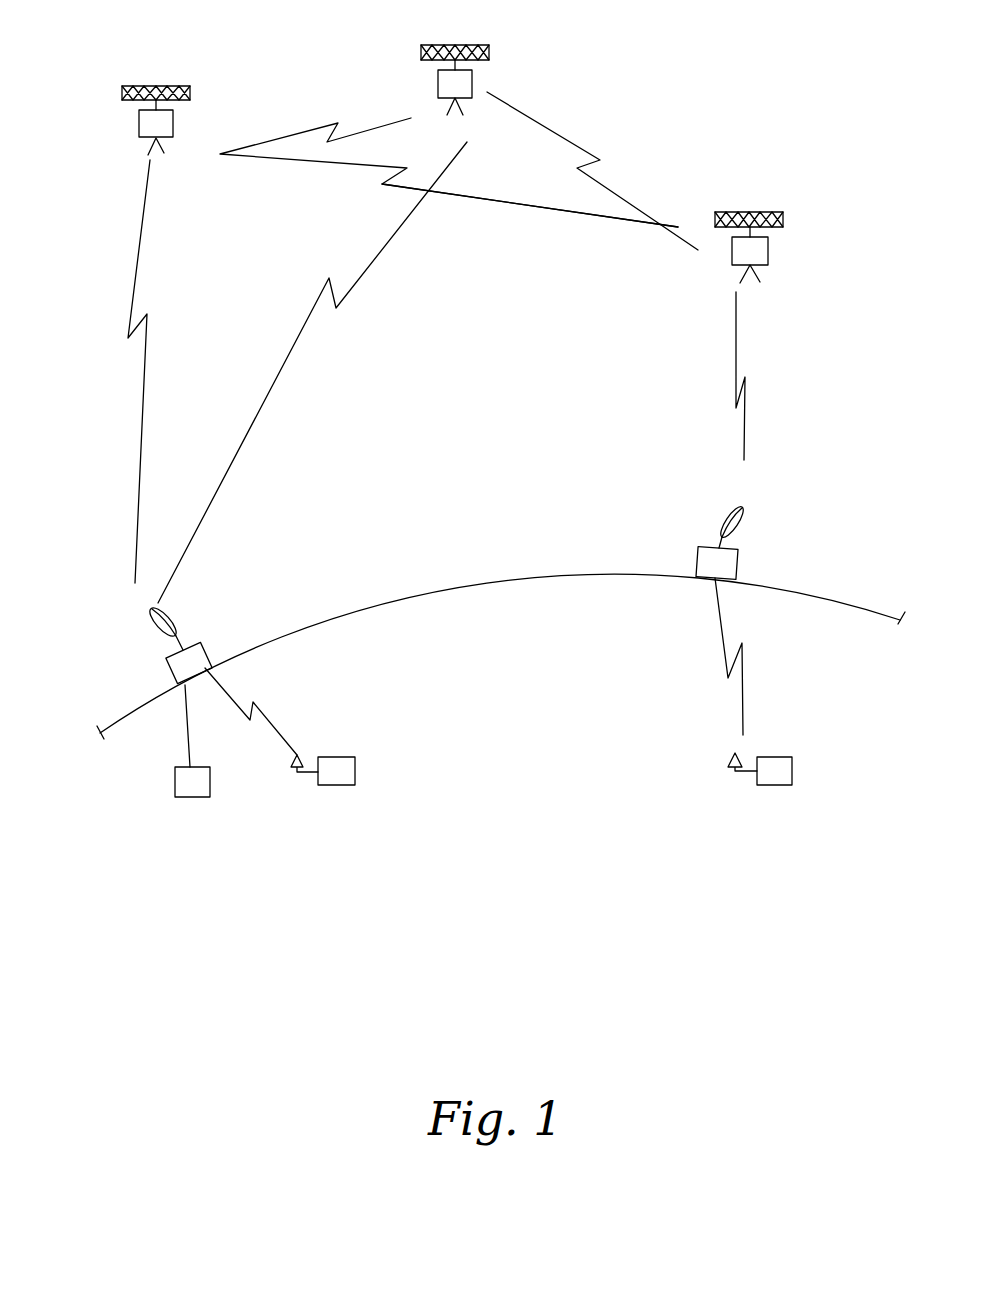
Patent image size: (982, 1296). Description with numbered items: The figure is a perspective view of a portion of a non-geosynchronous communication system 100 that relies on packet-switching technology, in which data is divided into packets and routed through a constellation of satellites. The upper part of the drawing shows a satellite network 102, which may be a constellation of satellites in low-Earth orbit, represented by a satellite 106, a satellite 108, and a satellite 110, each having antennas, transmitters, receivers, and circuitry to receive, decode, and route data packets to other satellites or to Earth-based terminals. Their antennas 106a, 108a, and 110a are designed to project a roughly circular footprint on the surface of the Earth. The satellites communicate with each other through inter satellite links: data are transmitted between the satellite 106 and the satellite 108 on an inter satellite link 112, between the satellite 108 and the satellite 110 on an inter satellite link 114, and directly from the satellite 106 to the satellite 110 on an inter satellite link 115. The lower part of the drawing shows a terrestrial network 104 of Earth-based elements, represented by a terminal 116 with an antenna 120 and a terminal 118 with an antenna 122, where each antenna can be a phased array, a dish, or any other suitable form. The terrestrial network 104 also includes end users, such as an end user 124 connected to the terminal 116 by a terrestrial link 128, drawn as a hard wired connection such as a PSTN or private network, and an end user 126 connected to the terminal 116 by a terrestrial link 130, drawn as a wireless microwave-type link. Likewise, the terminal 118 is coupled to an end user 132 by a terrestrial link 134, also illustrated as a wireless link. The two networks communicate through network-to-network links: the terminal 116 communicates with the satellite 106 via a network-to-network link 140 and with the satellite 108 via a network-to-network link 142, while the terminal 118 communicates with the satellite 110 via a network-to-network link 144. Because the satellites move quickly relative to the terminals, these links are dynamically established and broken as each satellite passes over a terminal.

The communication system 100 is at (670, 989).
The satellite network 102 is at (697, 112).
The terrestrial network 104 is at (422, 520).
The satellite 106 is at (173, 123).
The antenna 106a is at (138, 125).
The satellite 108 is at (448, 108).
The antenna 108a is at (463, 107).
The satellite 110 is at (768, 258).
The antenna 110a is at (757, 272).
The inter satellite link 112 is at (292, 135).
The inter satellite link 114 is at (547, 118).
The inter satellite link 115 is at (500, 200).
The terminal 116 is at (213, 653).
The terminal 118 is at (737, 570).
The antenna 120 is at (170, 615).
The antenna 122 is at (738, 525).
The end user 124 is at (192, 797).
The end user 126 is at (355, 772).
The terrestrial link 128 is at (190, 723).
The terrestrial link 130 is at (237, 702).
The end user 132 is at (775, 757).
The terrestrial link 134 is at (743, 688).
The network-to-network link 140 is at (144, 405).
The network-to-network link 142 is at (280, 372).
The network-to-network link 144 is at (738, 360).